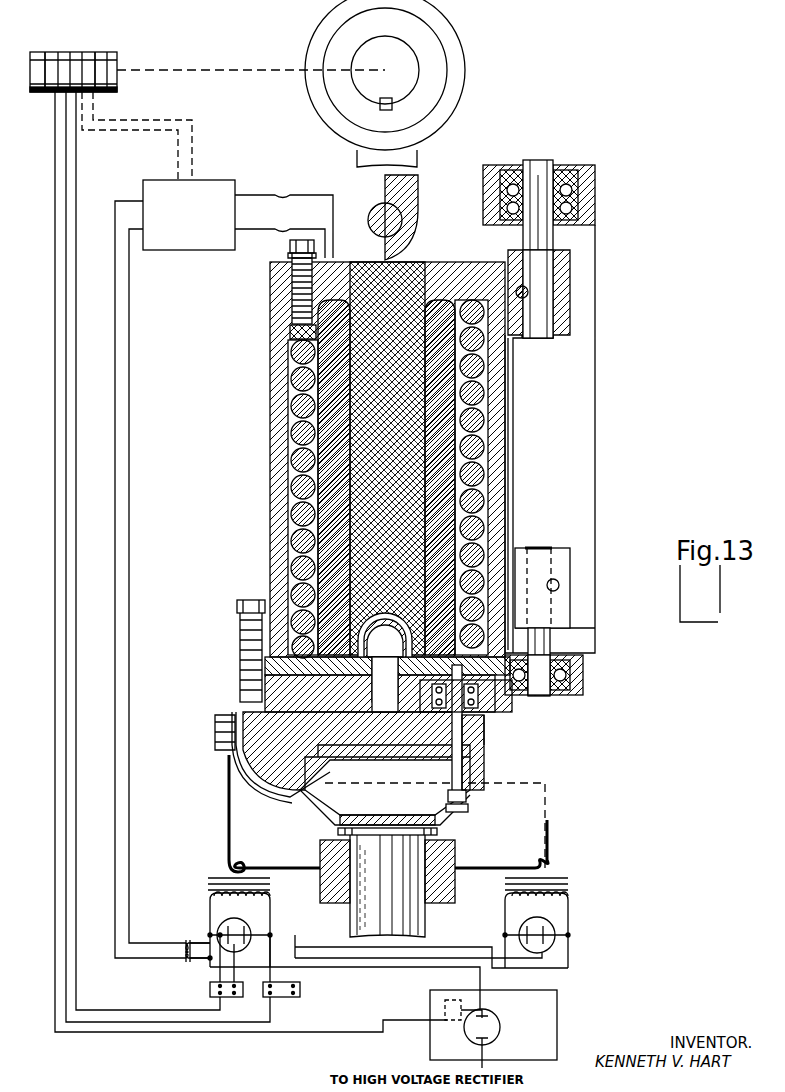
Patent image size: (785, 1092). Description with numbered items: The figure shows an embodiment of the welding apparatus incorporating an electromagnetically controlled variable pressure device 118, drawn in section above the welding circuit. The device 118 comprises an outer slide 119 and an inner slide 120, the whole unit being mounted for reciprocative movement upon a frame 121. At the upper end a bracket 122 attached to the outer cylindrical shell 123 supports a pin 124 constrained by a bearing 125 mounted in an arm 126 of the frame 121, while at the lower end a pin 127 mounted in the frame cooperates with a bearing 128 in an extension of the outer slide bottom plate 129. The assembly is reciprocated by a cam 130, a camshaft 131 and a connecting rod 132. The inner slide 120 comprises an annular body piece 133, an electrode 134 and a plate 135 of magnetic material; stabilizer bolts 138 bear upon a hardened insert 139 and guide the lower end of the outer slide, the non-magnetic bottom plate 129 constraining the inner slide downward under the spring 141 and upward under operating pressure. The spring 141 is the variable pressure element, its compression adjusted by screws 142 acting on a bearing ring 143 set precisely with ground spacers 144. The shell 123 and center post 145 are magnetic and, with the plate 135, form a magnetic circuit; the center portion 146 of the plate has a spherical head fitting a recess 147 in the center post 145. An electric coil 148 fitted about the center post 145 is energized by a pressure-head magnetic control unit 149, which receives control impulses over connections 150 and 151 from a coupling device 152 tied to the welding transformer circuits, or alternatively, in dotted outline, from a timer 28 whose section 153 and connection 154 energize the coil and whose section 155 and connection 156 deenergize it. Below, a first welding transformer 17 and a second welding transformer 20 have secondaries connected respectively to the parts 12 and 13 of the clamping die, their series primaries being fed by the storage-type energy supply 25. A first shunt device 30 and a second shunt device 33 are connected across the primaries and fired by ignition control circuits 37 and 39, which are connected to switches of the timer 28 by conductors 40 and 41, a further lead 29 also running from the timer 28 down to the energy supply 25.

The part of the clamping die 12 is at (320, 888).
The remaining part of the clamping die 13 is at (456, 888).
The first welding transformer 17 is at (226, 922).
The second welding transformer 20 is at (549, 921).
The energy supply 25 is at (560, 1006).
The timer 28 is at (34, 92).
The lead wire 29 is at (55, 692).
The first shunt device 30 is at (260, 918).
The second shunt device 33 is at (545, 943).
The ignition control circuit 37 is at (210, 990).
The ignition control circuit 39 is at (300, 990).
The conductor 40 is at (68, 692).
The conductor 41 is at (72, 722).
The variable pressure device 118 is at (462, 262).
The outer slide 119 is at (275, 462).
The inner slide 120 is at (512, 744).
The frame 121 is at (597, 410).
The bracket 122 is at (572, 290).
The outer cylindrical shell 123 is at (508, 380).
The pin 124 is at (555, 242).
The bearing 125 is at (566, 165).
The arm of the frame 126 is at (596, 186).
The pin 127 is at (560, 640).
The bearing 128 is at (565, 697).
The outer slide bottom plate 129 is at (505, 712).
The cam 130 is at (412, 53).
The camshaft 131 is at (440, 80).
The connecting rod 132 is at (462, 92).
The annular body piece 133 is at (485, 762).
The electrode 134 is at (440, 826).
The plate 135 is at (240, 665).
The stabilizer bolts 138 is at (452, 750).
The hardened insert 139 is at (490, 722).
The spring 141 is at (296, 385).
The screws 142 is at (292, 303).
The bearing ring 143 is at (290, 330).
The ground spacers 144 is at (290, 258).
The center post 145 is at (383, 462).
The center portion of the plate 146 is at (396, 626).
The recess 147 is at (385, 612).
The electric coil 148 is at (325, 500).
The pressure-head magnetic control unit 149 is at (160, 250).
The connection 150 is at (117, 768).
The connection 151 is at (131, 786).
The coupling device 152 is at (190, 946).
The section 153 is at (86, 52).
The connection 154 is at (140, 130).
The section 155 is at (98, 52).
The connection 156 is at (181, 120).